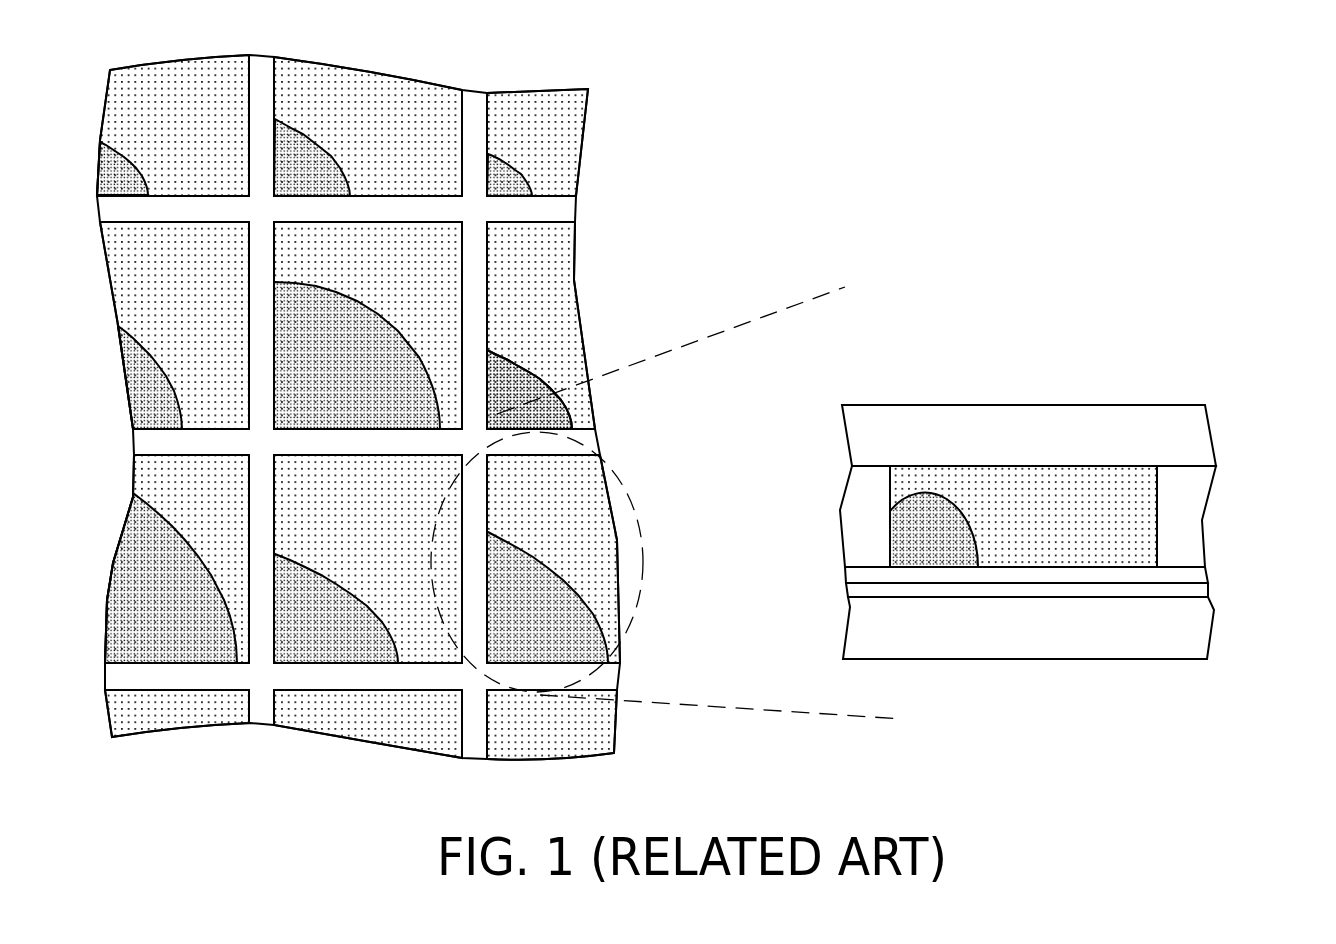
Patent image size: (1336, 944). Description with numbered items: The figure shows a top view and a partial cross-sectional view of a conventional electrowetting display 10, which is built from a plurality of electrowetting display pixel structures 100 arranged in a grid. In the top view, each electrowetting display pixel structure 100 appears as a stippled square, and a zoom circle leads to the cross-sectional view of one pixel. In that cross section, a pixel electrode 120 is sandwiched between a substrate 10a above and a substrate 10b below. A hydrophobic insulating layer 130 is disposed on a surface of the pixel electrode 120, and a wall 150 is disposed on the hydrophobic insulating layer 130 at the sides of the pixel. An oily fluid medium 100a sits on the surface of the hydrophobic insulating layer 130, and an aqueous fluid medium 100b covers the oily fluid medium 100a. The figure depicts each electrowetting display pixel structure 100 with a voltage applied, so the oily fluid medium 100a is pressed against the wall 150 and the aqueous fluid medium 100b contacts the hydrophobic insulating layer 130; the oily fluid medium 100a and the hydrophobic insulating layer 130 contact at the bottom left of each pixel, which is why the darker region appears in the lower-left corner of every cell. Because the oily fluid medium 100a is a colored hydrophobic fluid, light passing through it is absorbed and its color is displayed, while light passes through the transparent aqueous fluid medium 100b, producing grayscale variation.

The electrowetting display 10 is at (748, 768).
The substrate 10a is at (1108, 425).
The substrate 10b is at (1192, 627).
The electrowetting display pixel structure 100 is at (462, 263).
The oily fluid medium 100a is at (937, 512).
The aqueous fluid medium 100b is at (1015, 512).
The pixel electrode 120 is at (1127, 593).
The hydrophobic insulating layer 130 is at (1063, 575).
The wall 150 is at (865, 483).